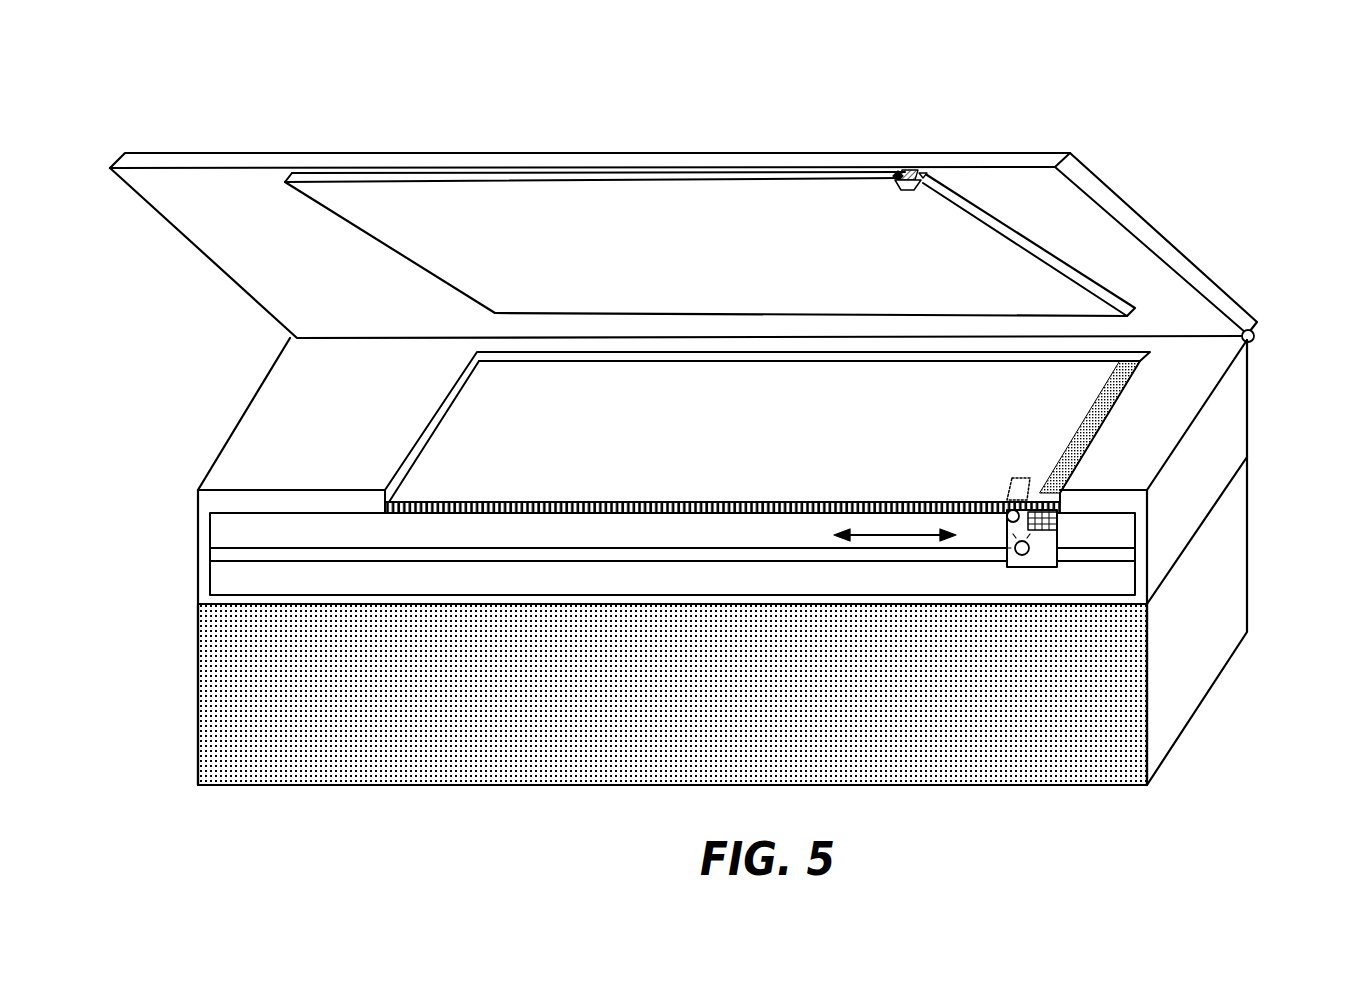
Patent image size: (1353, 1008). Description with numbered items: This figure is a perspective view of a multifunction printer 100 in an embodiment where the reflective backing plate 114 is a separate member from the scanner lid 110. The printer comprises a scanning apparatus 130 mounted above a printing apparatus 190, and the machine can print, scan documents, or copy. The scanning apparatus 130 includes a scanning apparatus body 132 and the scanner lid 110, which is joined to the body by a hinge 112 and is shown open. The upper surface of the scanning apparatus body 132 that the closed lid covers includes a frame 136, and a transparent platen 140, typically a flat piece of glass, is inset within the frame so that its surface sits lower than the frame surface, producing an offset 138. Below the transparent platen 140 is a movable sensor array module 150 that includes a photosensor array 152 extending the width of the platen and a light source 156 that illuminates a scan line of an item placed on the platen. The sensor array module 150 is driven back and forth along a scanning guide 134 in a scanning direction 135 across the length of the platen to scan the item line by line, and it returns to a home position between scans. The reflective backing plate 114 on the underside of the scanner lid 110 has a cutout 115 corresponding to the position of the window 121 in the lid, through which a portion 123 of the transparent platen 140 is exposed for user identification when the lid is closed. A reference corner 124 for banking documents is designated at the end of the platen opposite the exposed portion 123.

The multifunction printer 100 is at (314, 78).
The scanner lid 110 is at (230, 258).
The hinge 112 is at (1256, 336).
The reflective backing plate 114 is at (400, 232).
The cutout 115 is at (905, 191).
The window 121 is at (900, 169).
The exposed portion of transparent platen 123 is at (1018, 478).
The reference corner 124 is at (1153, 352).
The scanning apparatus 130 is at (174, 481).
The scanning apparatus body 132 is at (197, 518).
The scanning guide 134 is at (221, 557).
The scanning direction 135 is at (893, 548).
The frame 136 is at (257, 449).
The offset 138 is at (464, 377).
The transparent platen 140 is at (447, 437).
The sensor array module 150 is at (1038, 568).
The photosensor array 152 is at (1044, 538).
The light source 156 is at (1027, 570).
The printing apparatus 190 is at (198, 757).